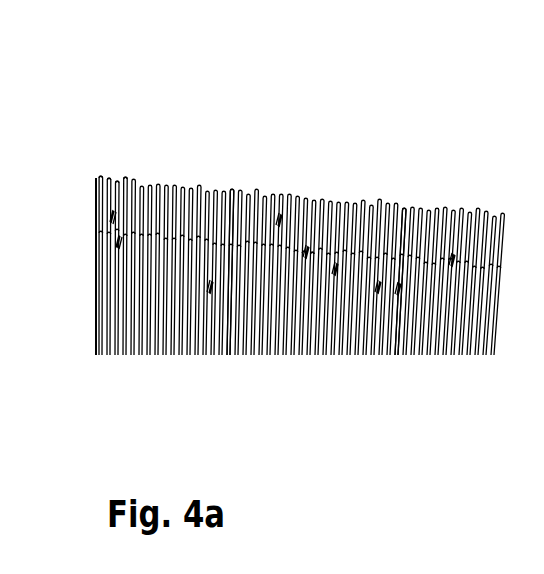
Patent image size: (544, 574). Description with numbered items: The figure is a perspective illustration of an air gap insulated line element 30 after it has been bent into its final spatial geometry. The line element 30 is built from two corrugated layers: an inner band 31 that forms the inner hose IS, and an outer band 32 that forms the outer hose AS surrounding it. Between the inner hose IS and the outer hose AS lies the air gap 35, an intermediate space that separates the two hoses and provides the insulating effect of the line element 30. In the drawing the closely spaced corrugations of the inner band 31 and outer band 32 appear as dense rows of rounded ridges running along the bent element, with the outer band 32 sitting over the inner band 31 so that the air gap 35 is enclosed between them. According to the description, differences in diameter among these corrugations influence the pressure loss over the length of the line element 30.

The line element 30 is at (229, 53).
The inner band 31 is at (307, 221).
The outer band 32 is at (232, 181).
The air gap 35 is at (400, 212).
The outer hose AS is at (122, 176).
The inner hose IS is at (100, 257).